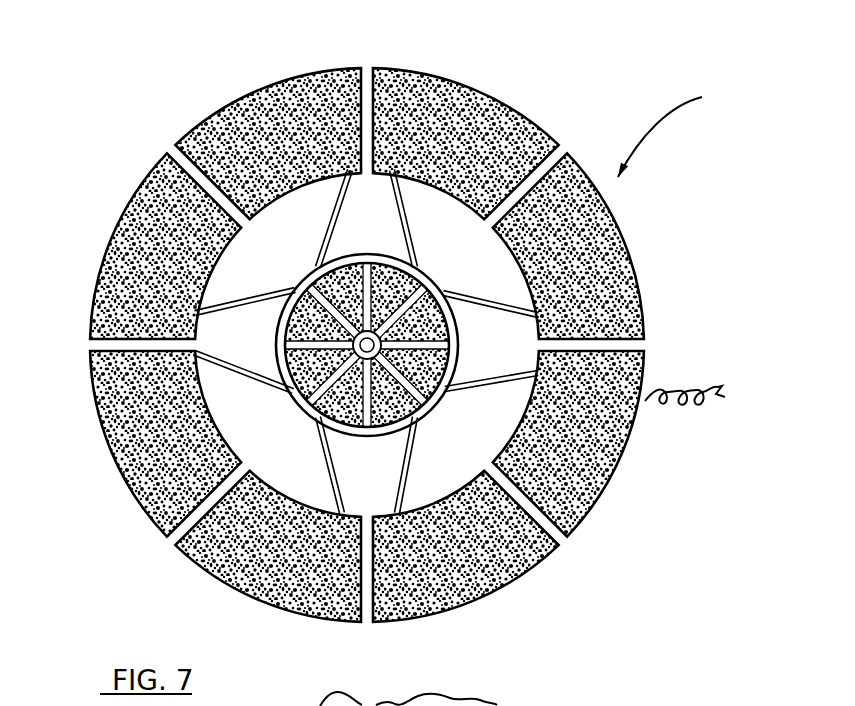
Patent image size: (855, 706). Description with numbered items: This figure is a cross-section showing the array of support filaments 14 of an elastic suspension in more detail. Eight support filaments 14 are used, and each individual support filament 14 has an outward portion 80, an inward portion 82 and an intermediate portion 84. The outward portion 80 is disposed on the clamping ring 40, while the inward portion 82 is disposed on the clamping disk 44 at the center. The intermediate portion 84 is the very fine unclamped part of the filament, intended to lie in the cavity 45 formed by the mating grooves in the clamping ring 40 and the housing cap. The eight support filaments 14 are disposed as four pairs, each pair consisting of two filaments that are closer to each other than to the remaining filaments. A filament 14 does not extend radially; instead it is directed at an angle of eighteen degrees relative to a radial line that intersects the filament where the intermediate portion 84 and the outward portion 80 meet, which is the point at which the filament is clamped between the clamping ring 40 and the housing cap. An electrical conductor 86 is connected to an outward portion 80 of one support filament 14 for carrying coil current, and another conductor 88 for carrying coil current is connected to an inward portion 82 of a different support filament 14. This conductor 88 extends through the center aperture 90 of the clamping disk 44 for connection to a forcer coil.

The support filament 14 is at (674, 127).
The clamping ring 40 is at (364, 356).
The clamping disk 44 is at (350, 346).
The cavity 45 is at (366, 341).
The outward portion 80 is at (203, 121).
The inward portion 82 is at (383, 258).
The intermediate portion 84 is at (396, 186).
The electrical conductor 86 is at (697, 400).
The conductor 88 is at (390, 331).
The center aperture 90 is at (369, 332).